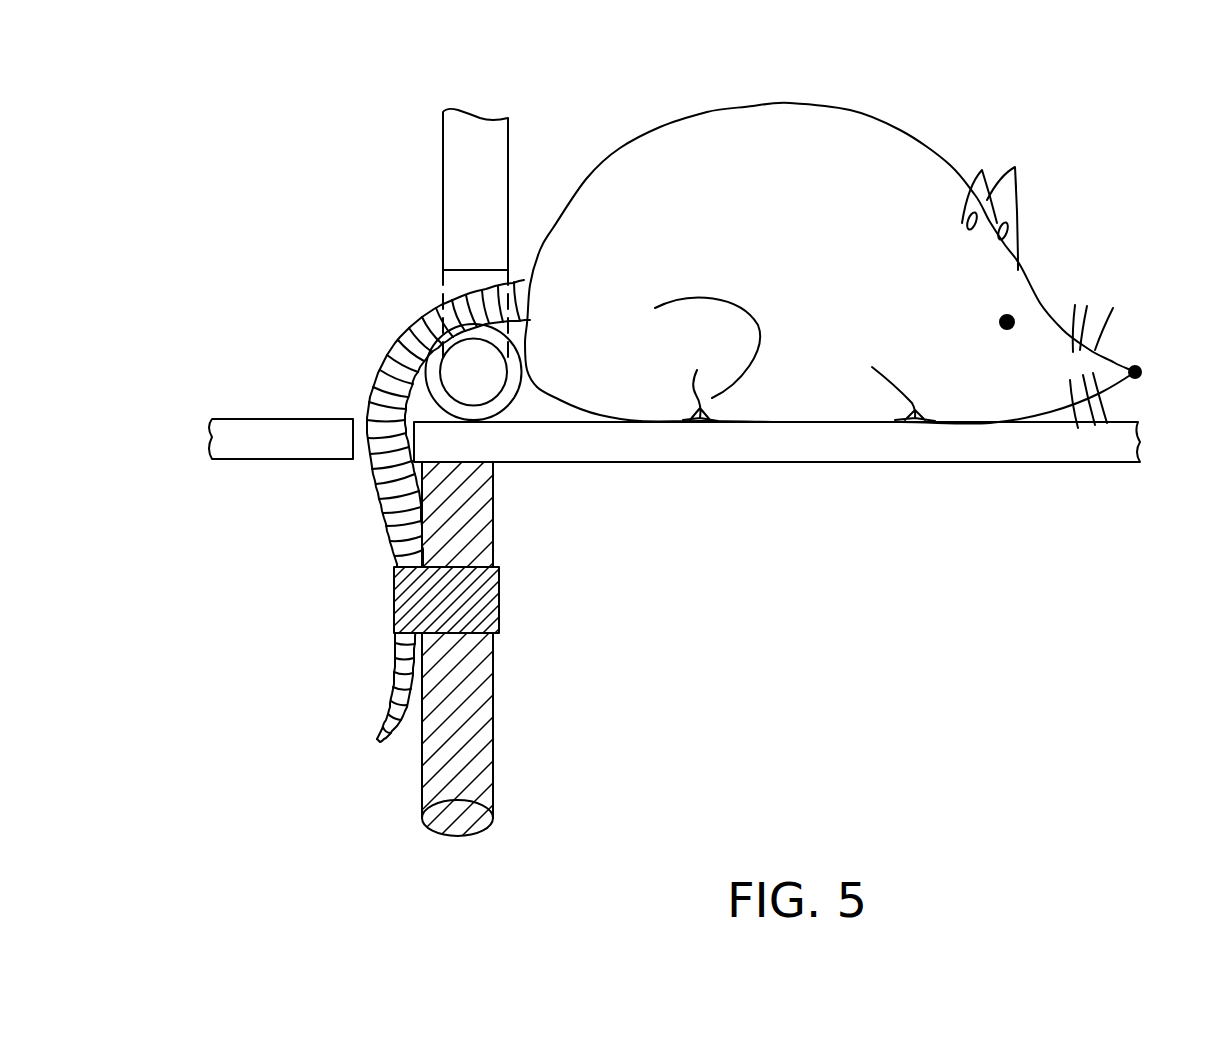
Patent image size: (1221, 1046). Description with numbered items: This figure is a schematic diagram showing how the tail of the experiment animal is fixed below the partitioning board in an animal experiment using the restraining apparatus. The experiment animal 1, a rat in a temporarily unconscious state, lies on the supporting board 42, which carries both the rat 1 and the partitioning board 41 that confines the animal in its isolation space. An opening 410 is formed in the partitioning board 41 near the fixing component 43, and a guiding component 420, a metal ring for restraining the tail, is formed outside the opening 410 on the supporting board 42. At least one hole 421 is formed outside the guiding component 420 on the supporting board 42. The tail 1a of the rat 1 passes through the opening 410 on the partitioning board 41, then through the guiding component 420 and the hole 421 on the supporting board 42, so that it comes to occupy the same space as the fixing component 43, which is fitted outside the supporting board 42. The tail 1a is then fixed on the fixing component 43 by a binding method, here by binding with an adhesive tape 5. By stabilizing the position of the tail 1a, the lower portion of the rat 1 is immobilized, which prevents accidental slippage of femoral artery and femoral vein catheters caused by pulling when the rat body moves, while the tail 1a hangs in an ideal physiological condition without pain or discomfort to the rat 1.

The experiment animal 1 is at (820, 306).
The tail 1a is at (382, 385).
The partitioning board 41 is at (488, 163).
The opening 410 is at (465, 282).
The supporting board 42 is at (258, 440).
The guiding component 420 is at (505, 395).
The hole 421 is at (363, 445).
The fixing component 43 is at (470, 690).
The adhesive tape 5 is at (475, 598).